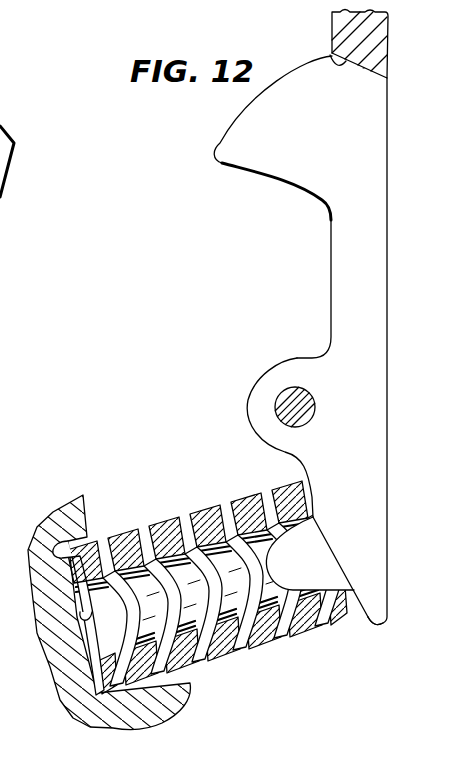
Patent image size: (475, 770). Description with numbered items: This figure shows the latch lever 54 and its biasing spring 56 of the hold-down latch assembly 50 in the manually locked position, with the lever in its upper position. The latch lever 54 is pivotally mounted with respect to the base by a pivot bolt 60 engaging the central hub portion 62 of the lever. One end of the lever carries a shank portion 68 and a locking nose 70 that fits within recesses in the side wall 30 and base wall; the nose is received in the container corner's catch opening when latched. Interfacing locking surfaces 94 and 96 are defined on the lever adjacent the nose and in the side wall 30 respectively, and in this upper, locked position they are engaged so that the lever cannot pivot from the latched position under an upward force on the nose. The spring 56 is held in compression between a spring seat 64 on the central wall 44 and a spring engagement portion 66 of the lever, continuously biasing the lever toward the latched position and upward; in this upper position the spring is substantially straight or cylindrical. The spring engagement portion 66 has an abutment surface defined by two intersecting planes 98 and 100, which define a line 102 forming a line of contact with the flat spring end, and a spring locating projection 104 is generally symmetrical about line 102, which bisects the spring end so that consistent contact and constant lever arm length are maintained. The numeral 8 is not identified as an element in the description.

The fragment 8 is at (4, 312).
The side wall 30 is at (332, 26).
The central wall 44 is at (63, 513).
The hold-down latch assembly 50 is at (229, 285).
The latch lever 54 is at (372, 333).
The spring 56 is at (32, 0).
The pivot bolt 60 is at (294, 400).
The hub portion 62 is at (256, 405).
The spring seat 64 is at (88, 612).
The spring engagement portion 66 is at (372, 588).
The shank portion 68 is at (345, 252).
The locking nose 70 is at (262, 157).
The locking surface 94 is at (0, 97).
The locking surface 96 is at (332, 57).
The plane 98 is at (300, 492).
The plane 100 is at (352, 603).
The line 102 is at (320, 553).
The spring locating projection 104 is at (250, 506).